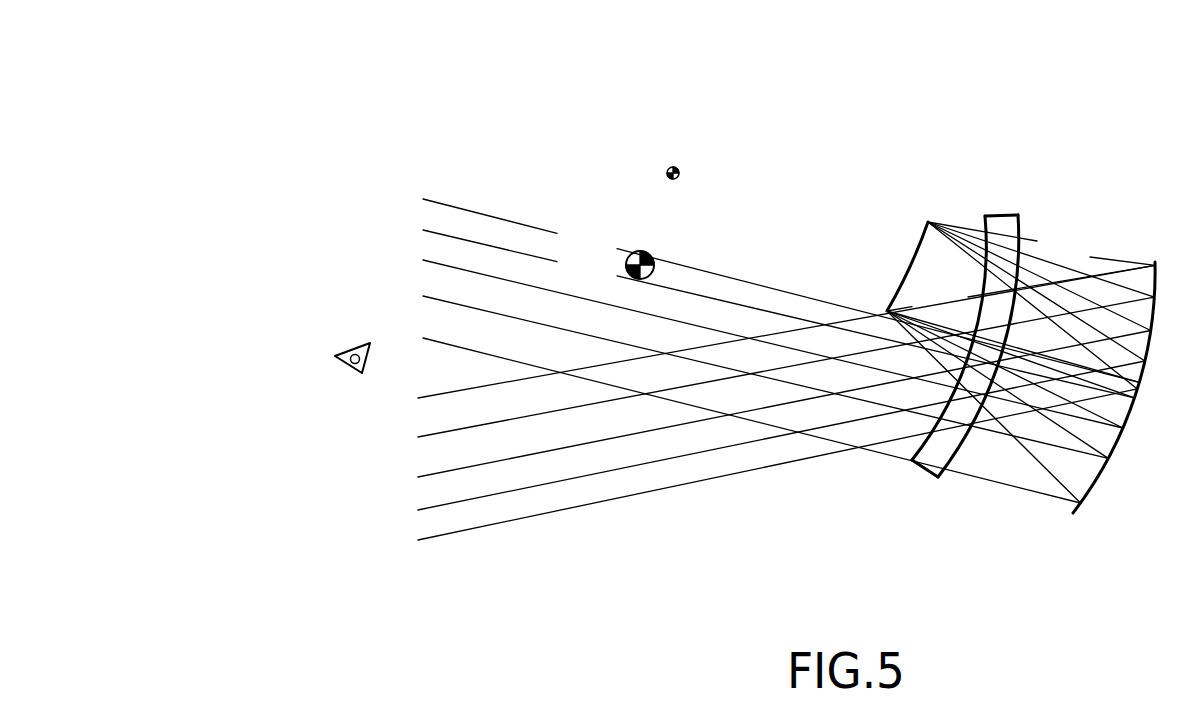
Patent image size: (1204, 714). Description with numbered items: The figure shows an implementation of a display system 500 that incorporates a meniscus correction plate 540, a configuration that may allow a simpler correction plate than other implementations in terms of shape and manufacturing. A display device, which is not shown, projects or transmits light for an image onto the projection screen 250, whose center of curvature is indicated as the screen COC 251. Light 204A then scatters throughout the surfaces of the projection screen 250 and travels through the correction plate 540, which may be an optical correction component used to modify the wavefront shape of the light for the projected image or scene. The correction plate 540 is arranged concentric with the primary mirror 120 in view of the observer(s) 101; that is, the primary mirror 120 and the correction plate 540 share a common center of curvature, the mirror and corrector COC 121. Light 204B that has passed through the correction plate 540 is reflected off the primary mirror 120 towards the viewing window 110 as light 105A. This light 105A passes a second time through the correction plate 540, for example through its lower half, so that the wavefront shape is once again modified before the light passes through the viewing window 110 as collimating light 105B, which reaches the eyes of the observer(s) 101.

The display system 500 is at (469, 104).
The observer(s) 101 is at (340, 433).
The light 105A is at (1079, 501).
The collimating light 105B is at (835, 383).
The viewing window 110 is at (870, 448).
The primary mirror 120 is at (1073, 512).
The COC 121 is at (607, 273).
The light 204A is at (967, 309).
The light 204B is at (1090, 253).
The projection screen 250 is at (911, 228).
The screen center of curvature 251 is at (737, 175).
The meniscus correction plate 540 is at (1022, 286).